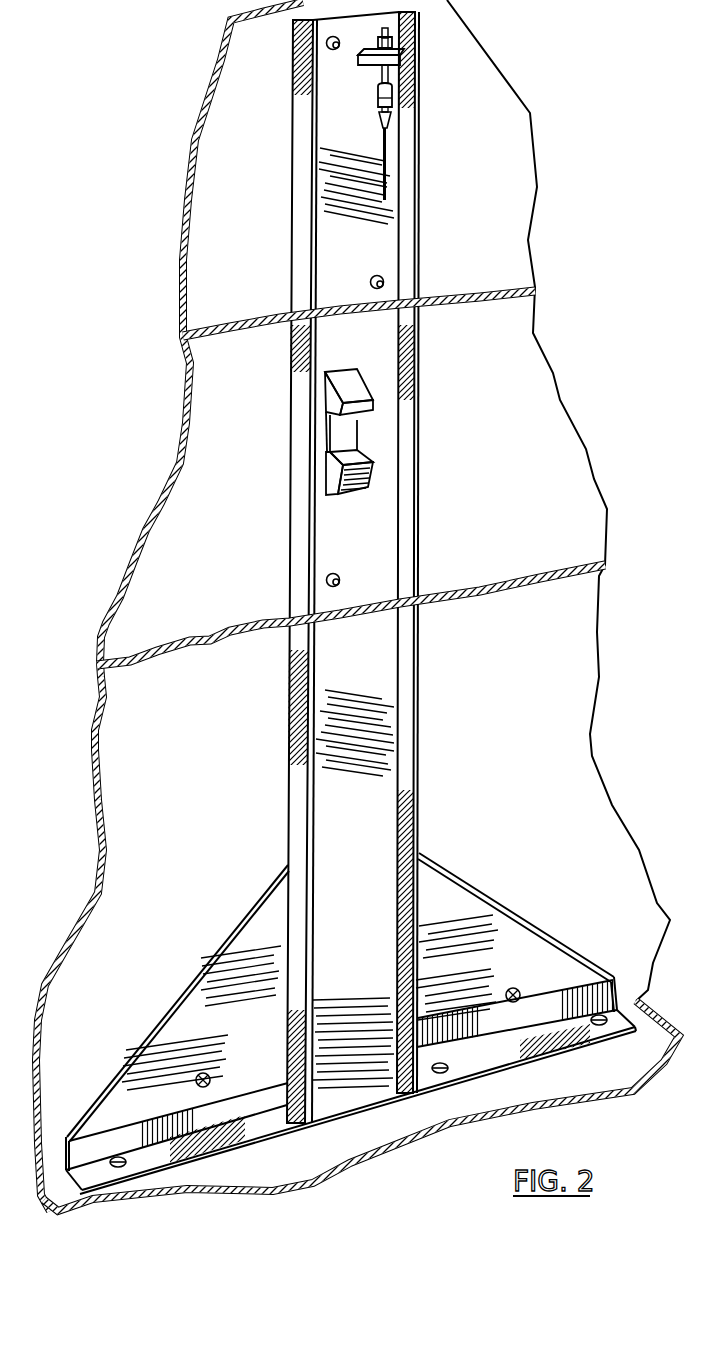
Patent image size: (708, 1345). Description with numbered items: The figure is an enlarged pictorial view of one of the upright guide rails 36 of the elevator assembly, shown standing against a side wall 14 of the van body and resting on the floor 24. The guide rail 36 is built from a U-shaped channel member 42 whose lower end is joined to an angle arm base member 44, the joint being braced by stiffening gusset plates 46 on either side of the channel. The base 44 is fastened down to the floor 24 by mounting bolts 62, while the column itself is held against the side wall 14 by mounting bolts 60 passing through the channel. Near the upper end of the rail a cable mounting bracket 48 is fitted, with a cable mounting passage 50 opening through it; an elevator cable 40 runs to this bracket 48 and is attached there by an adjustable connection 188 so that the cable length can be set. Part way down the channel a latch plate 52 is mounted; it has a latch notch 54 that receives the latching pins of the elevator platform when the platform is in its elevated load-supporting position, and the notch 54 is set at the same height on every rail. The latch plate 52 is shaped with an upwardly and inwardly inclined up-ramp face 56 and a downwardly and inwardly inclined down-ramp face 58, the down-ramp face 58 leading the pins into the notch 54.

The side wall 14 is at (152, 550).
The floor 24 is at (400, 1118).
The upright guide rail 36 is at (296, 530).
The elevator cable 40 is at (390, 163).
The U-shaped channel member 42 is at (410, 530).
The angle arm base member 44 is at (178, 1158).
The stiffening gusset plate 46 is at (206, 1000).
The cable mounting bracket 48 is at (403, 56).
The cable mounting passage 50 is at (373, 68).
The latch plate 52 is at (389, 432).
The latch notch 54 is at (365, 432).
The up-ramp face 56 is at (356, 492).
The down-ramp face 58 is at (346, 386).
The mounting bolt 60 is at (385, 282).
The mounting bolt 62 is at (270, 1125).
The adjustable connection 188 is at (393, 33).